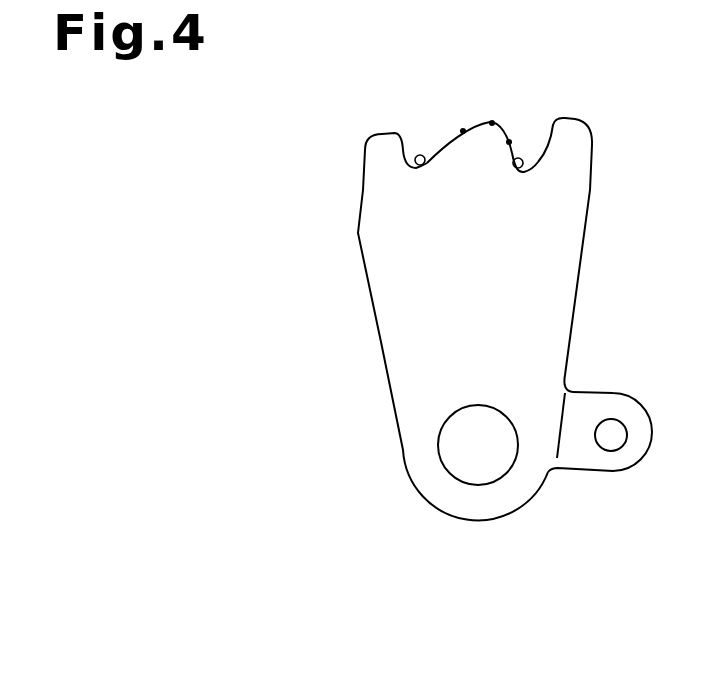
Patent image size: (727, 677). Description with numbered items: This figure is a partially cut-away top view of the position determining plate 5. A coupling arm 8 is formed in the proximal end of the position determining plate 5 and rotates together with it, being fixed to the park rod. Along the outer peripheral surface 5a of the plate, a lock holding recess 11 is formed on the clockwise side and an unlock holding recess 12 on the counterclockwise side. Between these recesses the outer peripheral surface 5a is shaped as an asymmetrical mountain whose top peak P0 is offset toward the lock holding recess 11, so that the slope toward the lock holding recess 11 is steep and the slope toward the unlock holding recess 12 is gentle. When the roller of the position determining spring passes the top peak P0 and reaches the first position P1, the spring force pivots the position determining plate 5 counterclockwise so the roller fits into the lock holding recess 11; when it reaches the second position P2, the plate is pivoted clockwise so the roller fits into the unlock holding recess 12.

The position determining plate 5 is at (381, 342).
The outer peripheral surface 5a is at (385, 133).
The unlock holding recess 12 is at (420, 165).
The lock holding recess 11 is at (518, 168).
The top peak P0 is at (492, 123).
The first position P1 is at (509, 142).
The second position P2 is at (463, 131).
The coupling arm 8 is at (591, 468).